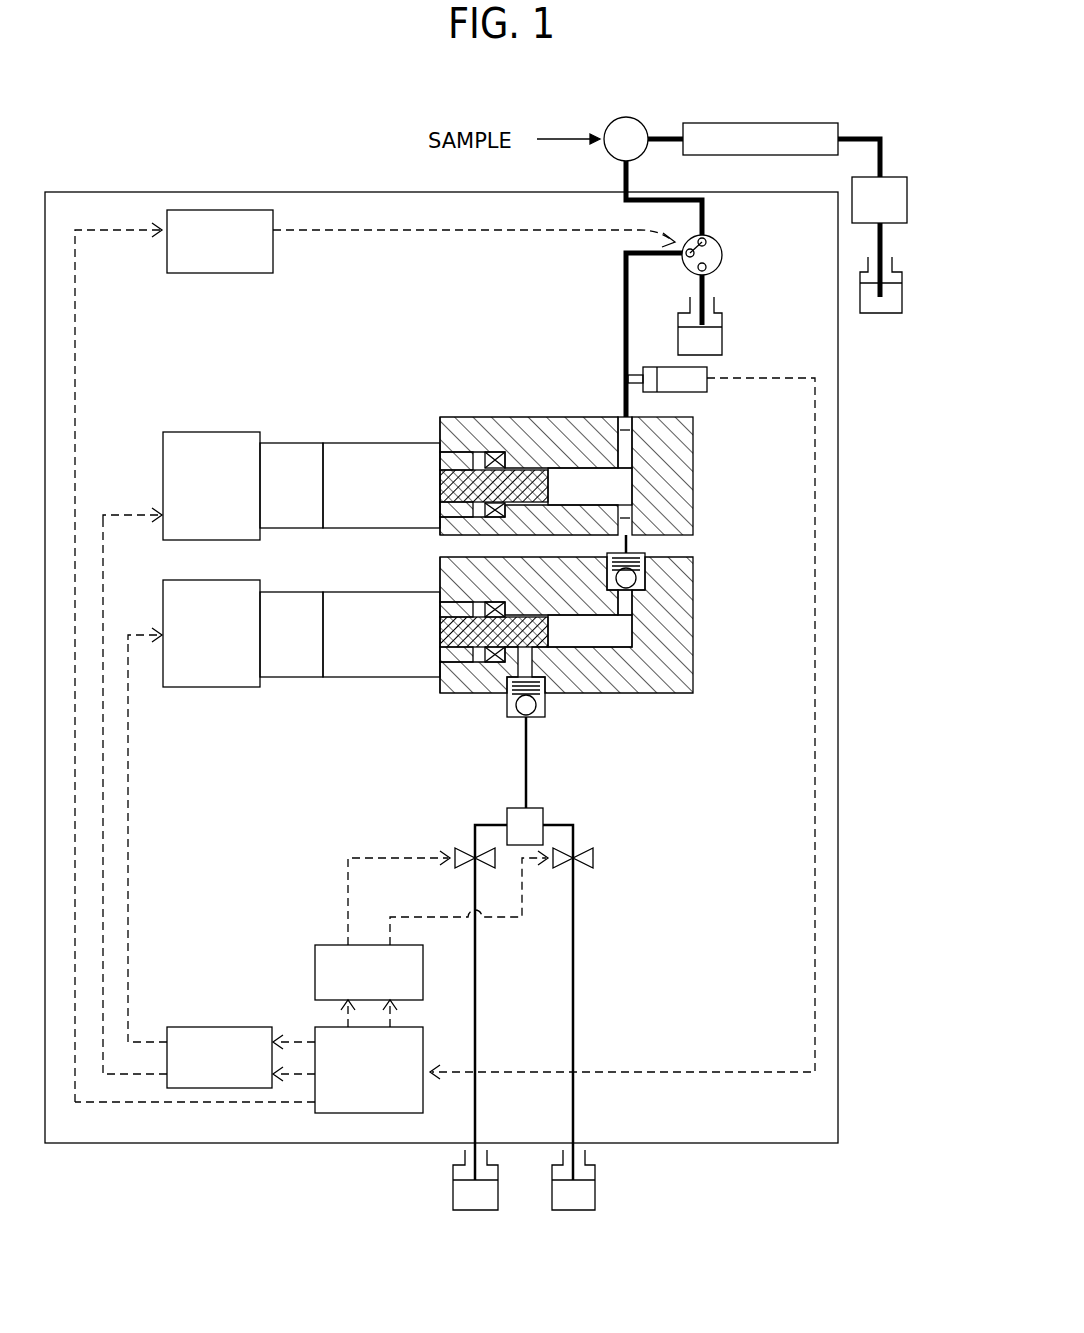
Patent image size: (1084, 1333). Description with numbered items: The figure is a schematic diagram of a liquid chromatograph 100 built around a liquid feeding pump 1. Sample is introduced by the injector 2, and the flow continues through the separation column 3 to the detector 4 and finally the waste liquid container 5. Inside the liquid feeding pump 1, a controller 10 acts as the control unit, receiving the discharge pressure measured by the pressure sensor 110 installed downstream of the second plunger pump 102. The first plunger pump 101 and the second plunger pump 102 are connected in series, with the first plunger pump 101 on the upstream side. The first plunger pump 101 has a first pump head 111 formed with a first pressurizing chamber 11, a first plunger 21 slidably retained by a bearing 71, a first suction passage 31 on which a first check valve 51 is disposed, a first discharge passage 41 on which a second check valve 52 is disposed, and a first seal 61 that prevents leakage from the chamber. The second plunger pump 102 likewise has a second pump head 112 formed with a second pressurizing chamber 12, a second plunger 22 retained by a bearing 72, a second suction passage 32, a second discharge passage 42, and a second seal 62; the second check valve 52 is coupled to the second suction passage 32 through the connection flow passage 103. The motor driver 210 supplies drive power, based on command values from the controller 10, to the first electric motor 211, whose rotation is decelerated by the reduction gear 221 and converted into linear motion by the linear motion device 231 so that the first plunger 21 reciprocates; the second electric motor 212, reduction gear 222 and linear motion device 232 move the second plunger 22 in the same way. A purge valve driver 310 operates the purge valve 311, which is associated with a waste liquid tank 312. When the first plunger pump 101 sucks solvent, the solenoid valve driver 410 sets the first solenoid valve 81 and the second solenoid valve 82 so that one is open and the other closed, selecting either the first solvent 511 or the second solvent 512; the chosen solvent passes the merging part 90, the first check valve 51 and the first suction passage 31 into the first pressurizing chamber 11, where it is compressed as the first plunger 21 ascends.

The liquid chromatograph 100 is at (97, 109).
The liquid feeding pump 1 is at (328, 192).
The injector 2 is at (630, 117).
The separation column 3 is at (758, 123).
The detector 4 is at (907, 196).
The waste liquid container 5 is at (902, 276).
The controller 10 is at (315, 1027).
The first pressurizing chamber 11 is at (640, 660).
The second pressurizing chamber 12 is at (615, 487).
The first plunger 21 is at (572, 645).
The second plunger 22 is at (540, 482).
The first suction passage 31 is at (548, 672).
The second suction passage 32 is at (630, 518).
The first discharge passage 41 is at (630, 604).
The second discharge passage 42 is at (620, 428).
The first check valve 51 is at (545, 722).
The second check valve 52 is at (637, 573).
The first seal 61 is at (492, 662).
The second seal 62 is at (495, 452).
The bearing 71 is at (448, 693).
The bearing 72 is at (456, 440).
The first solenoid valve 81 is at (455, 850).
The second solenoid valve 82 is at (593, 858).
The merging part 90 is at (507, 808).
The first plunger pump 101 is at (566, 641).
The second plunger pump 102 is at (573, 445).
The connection flow passage 103 is at (632, 546).
The pressure sensor 110 is at (707, 370).
The first pump head 111 is at (440, 575).
The second pump head 112 is at (440, 437).
The motor driver 210 is at (210, 1027).
The first electric motor 211 is at (212, 687).
The second electric motor 212 is at (208, 432).
The reduction gear 221 is at (290, 677).
The reduction gear 222 is at (283, 443).
The linear motion device 231 is at (353, 677).
The linear motion device 232 is at (348, 443).
The purge valve driver 310 is at (215, 273).
The purge valve 311 is at (722, 250).
The waste liquid tank 312 is at (722, 318).
The solenoid valve driver 410 is at (315, 950).
The first solvent 511 is at (475, 1195).
The second solvent 512 is at (573, 1195).